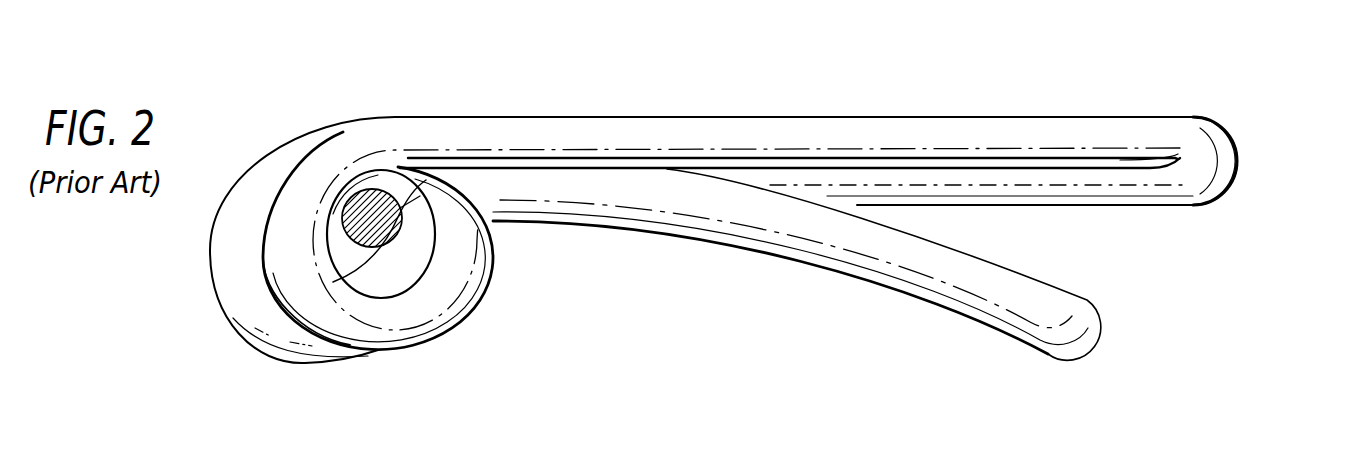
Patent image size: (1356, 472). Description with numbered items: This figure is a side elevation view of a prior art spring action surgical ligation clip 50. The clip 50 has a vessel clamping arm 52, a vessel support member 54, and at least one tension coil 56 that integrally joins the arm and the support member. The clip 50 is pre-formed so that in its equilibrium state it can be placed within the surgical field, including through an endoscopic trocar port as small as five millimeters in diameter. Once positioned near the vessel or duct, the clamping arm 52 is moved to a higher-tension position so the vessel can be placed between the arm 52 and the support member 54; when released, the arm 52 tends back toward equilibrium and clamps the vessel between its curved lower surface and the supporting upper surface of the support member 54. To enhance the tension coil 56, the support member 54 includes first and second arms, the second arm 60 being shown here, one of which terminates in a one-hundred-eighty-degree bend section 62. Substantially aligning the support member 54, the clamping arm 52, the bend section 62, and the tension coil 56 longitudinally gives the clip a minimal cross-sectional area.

The clip 50 is at (318, 94).
The vessel clamping arm 52 is at (870, 283).
The vessel support member 54 is at (775, 187).
The tension coil 56 is at (477, 290).
The second arm 60 is at (742, 125).
The 180-degree bend section 62 is at (1238, 163).